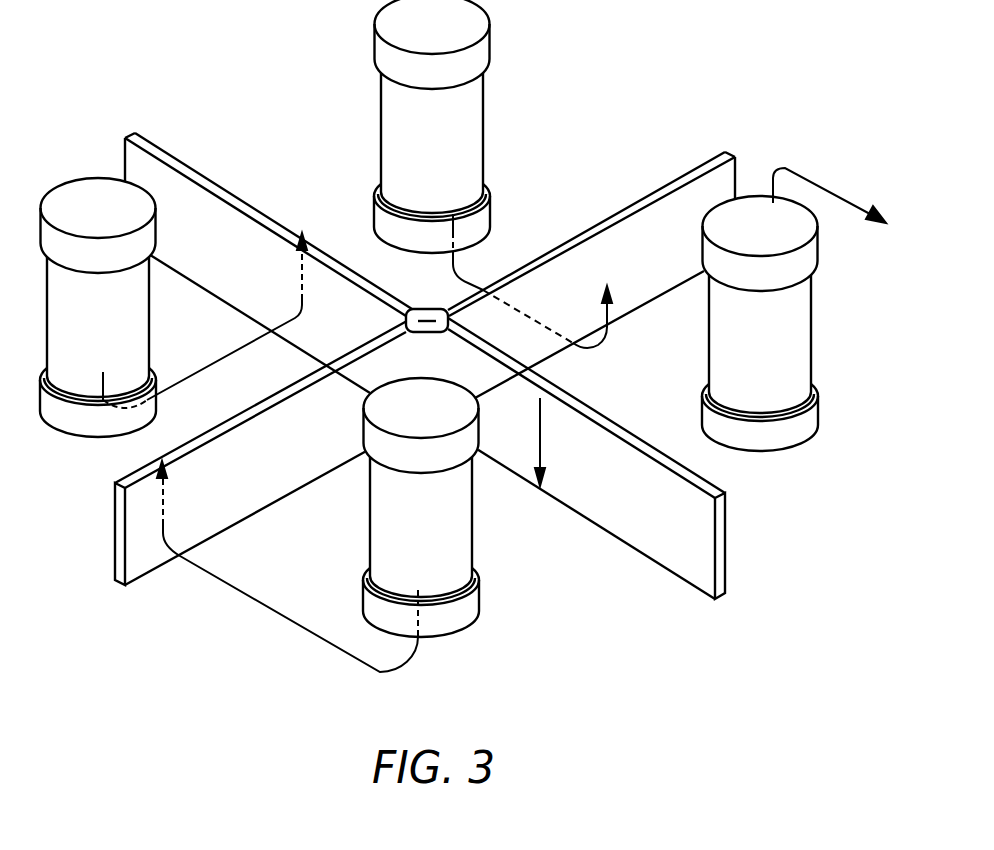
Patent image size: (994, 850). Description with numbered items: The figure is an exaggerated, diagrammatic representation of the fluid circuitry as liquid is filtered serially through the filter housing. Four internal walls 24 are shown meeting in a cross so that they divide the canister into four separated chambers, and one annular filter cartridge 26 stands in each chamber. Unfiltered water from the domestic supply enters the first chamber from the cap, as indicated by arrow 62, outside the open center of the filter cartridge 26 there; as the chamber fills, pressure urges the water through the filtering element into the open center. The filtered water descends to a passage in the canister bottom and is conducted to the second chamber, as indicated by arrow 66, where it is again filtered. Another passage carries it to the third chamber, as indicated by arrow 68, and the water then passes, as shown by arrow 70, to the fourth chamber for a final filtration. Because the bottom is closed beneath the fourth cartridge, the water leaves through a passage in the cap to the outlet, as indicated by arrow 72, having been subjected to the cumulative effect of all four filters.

The internal wall 24 is at (187, 259).
The filter cartridge 26 is at (417, 36).
The arrow 62 is at (540, 422).
The arrow 66 is at (290, 617).
The arrow 68 is at (238, 350).
The arrow 70 is at (551, 329).
The arrow 72 is at (852, 199).